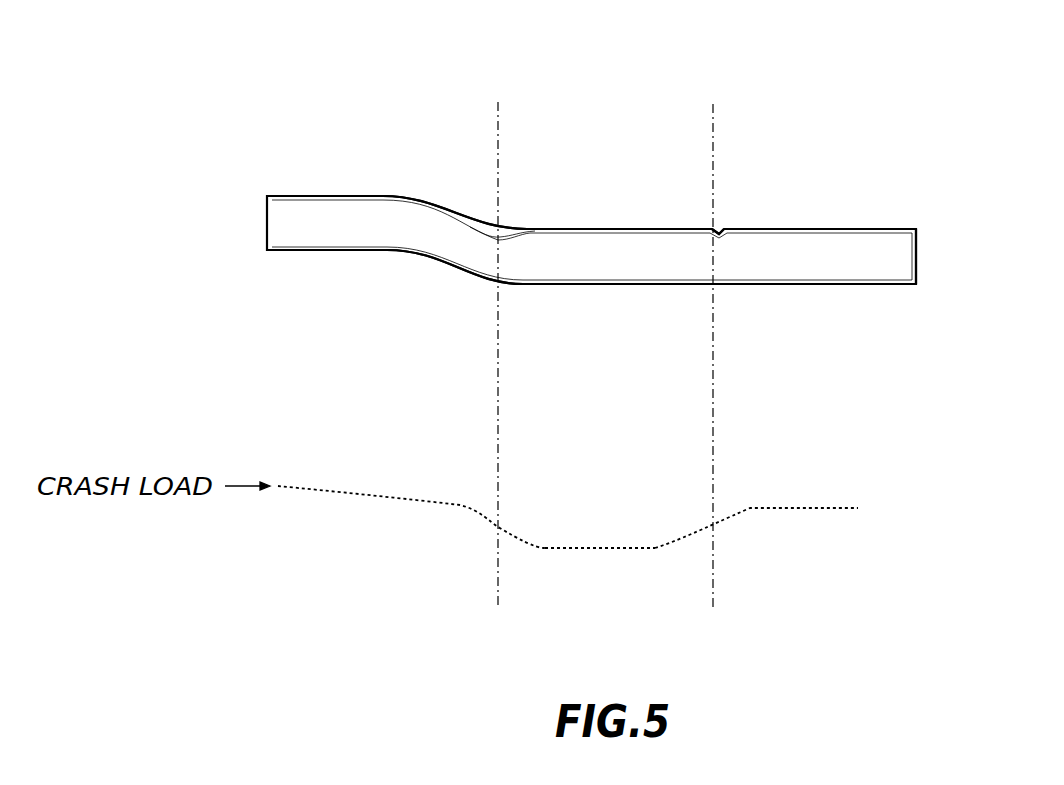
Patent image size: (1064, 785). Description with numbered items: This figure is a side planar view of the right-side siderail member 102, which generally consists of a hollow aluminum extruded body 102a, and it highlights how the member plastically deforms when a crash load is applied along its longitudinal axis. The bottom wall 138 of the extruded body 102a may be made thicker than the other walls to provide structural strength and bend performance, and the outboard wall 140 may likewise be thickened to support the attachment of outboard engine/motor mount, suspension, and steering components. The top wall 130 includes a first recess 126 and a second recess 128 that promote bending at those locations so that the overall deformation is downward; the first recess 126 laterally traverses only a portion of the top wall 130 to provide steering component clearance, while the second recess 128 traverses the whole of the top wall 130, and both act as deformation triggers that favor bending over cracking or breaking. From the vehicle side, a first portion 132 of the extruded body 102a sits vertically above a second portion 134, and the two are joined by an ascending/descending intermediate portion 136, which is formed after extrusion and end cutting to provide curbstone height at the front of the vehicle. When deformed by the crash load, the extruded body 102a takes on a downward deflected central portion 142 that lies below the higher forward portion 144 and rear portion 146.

The right-side siderail member 102 is at (629, 188).
The hollow aluminum extruded body 102a is at (592, 256).
The first recess 126 is at (522, 202).
The second recess 128 is at (737, 212).
The top wall 130 is at (825, 211).
The first portion 132 is at (336, 179).
The second portion 134 is at (921, 207).
The intermediate portion 136 is at (475, 186).
The bottom wall 138 is at (362, 280).
The outboard wall 140 is at (319, 238).
The downward deflected central portion 142 is at (628, 514).
The forward portion 144 is at (404, 476).
The rear portion 146 is at (823, 482).